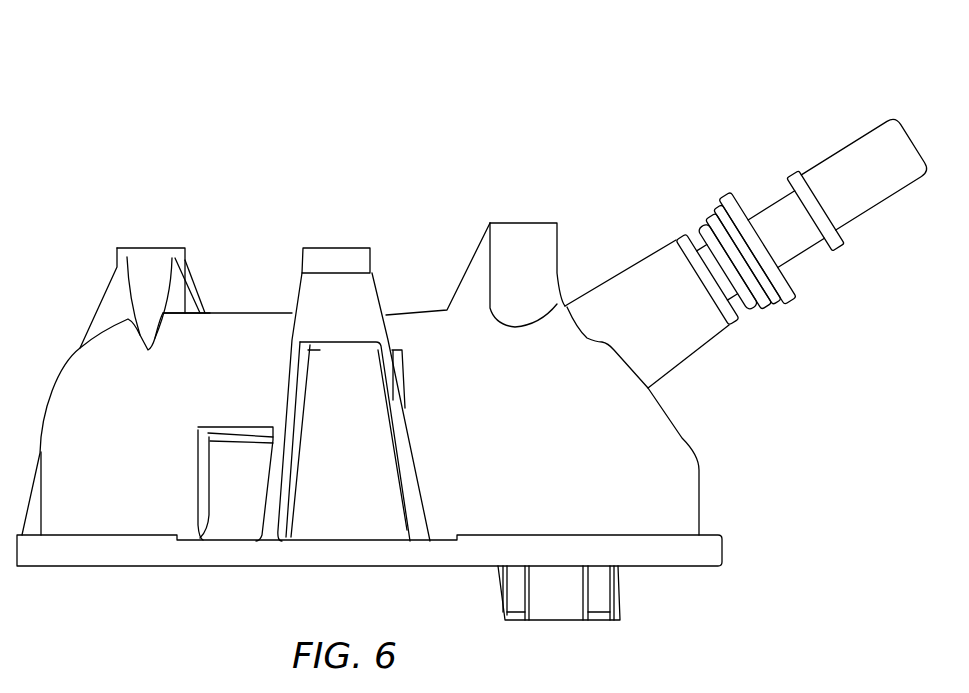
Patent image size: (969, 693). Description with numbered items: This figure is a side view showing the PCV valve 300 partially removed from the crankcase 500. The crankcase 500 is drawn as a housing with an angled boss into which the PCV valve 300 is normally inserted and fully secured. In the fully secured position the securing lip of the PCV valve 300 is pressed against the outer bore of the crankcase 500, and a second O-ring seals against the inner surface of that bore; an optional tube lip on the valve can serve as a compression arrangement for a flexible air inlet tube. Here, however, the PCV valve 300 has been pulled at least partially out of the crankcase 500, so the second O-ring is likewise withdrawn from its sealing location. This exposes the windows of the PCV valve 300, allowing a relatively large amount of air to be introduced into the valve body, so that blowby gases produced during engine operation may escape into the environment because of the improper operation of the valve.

The PCV valve 300 is at (809, 216).
The crankcase 500 is at (660, 495).